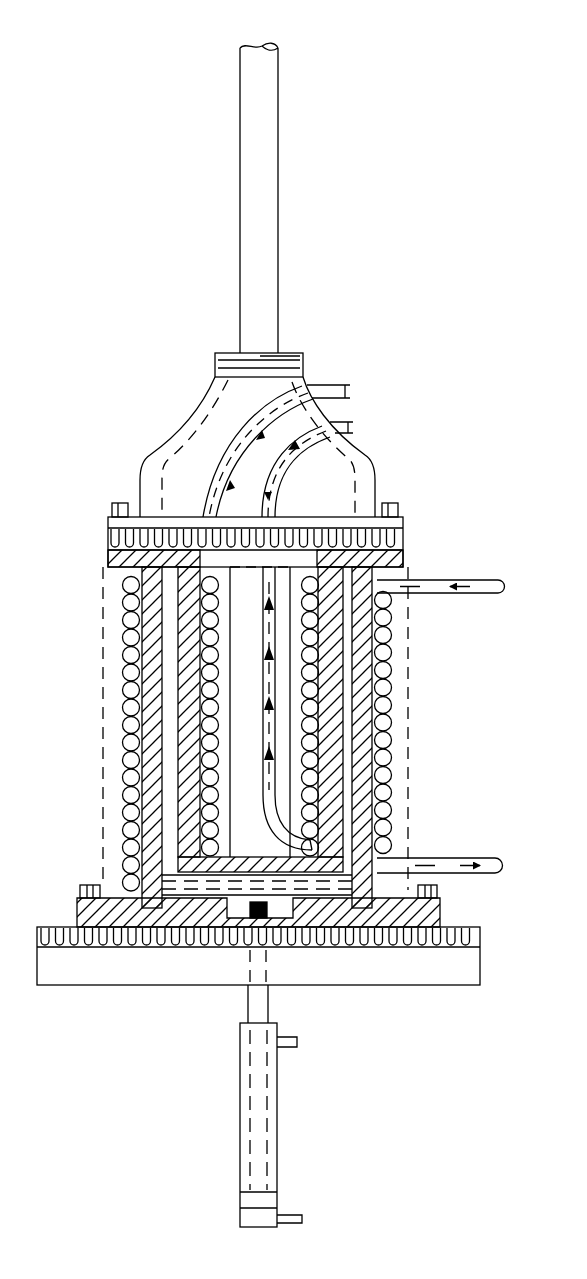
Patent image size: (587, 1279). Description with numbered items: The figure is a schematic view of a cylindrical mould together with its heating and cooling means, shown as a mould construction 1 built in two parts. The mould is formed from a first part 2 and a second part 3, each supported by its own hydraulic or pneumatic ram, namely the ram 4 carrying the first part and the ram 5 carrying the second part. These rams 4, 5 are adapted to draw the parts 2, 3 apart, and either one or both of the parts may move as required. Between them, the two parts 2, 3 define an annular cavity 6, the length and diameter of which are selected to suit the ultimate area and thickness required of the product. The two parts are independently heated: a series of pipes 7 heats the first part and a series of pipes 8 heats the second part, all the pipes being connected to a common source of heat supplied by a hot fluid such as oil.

The melt/degassing apparatus 1 is at (277, 669).
The mould part 2 is at (405, 526).
The mould part 3 is at (482, 950).
The hydraulic or pneumatic ram 4 is at (273, 270).
The hydraulic or pneumatic ram 5 is at (238, 1113).
The annular cavity 6 is at (158, 740).
The pipes 7 is at (357, 424).
The pipes 8 is at (507, 586).